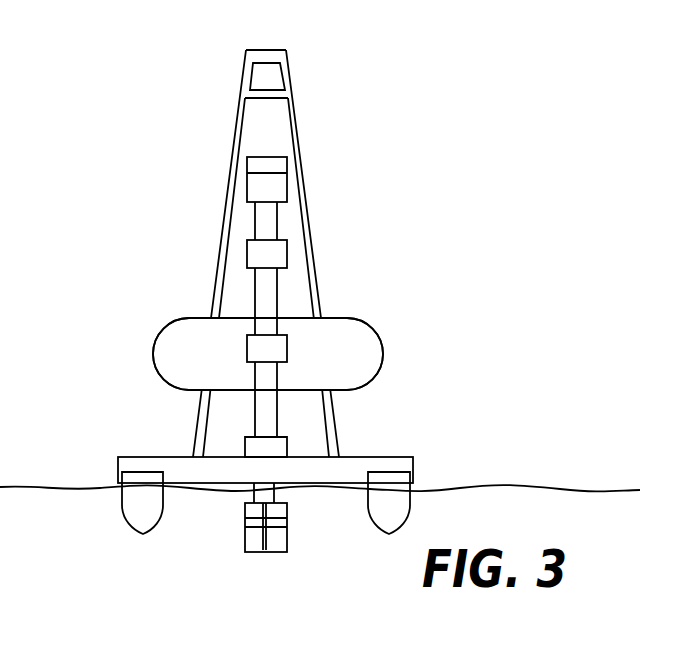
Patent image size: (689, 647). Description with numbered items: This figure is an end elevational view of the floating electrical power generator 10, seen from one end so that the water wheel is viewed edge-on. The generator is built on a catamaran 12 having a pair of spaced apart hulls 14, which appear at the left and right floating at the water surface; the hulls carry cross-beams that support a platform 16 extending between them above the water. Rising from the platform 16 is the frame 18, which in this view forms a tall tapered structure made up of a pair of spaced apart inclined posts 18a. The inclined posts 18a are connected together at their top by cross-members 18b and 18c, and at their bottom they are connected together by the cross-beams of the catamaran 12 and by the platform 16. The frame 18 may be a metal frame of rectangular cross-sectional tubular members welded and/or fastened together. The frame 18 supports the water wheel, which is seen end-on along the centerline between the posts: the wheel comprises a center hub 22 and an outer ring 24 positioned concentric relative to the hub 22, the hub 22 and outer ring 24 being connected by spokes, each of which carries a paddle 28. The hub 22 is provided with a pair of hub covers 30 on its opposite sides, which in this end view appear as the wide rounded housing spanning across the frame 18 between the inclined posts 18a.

The floating electrical power generator 10 is at (112, 73).
The catamaran 12 is at (112, 486).
The hulls 14 is at (138, 472).
The platform 16 is at (142, 449).
The frame 18 is at (265, 236).
The inclined posts 18a is at (233, 143).
The cross-member 18b is at (268, 57).
The cross-member 18c is at (265, 95).
The center hub 22 is at (378, 322).
The outer ring 24 is at (265, 220).
The paddle 28 is at (262, 345).
The hub covers 30 is at (372, 353).